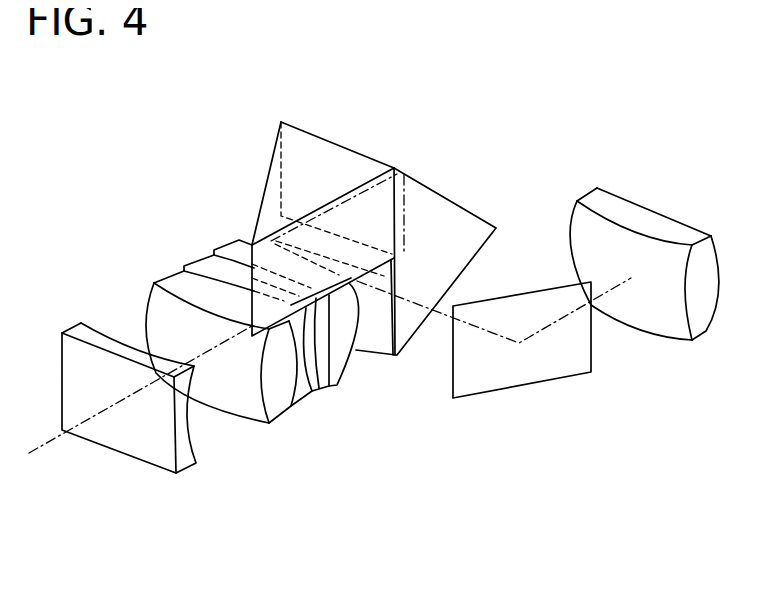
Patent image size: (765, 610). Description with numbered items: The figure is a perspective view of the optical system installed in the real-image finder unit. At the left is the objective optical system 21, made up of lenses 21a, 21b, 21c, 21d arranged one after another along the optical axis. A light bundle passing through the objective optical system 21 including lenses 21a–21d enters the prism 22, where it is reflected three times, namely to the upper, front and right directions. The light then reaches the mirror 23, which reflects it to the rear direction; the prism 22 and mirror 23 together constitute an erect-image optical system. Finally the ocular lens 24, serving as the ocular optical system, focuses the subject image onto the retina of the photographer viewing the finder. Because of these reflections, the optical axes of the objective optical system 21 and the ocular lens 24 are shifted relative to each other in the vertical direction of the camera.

The objective optical system 21 is at (265, 413).
The lens 21a is at (187, 470).
The lens 21b is at (279, 428).
The lens 21c is at (308, 405).
The lens 21d is at (379, 398).
The prism 22 is at (323, 153).
The mirror 23 is at (517, 304).
The ocular lens 24 is at (657, 203).